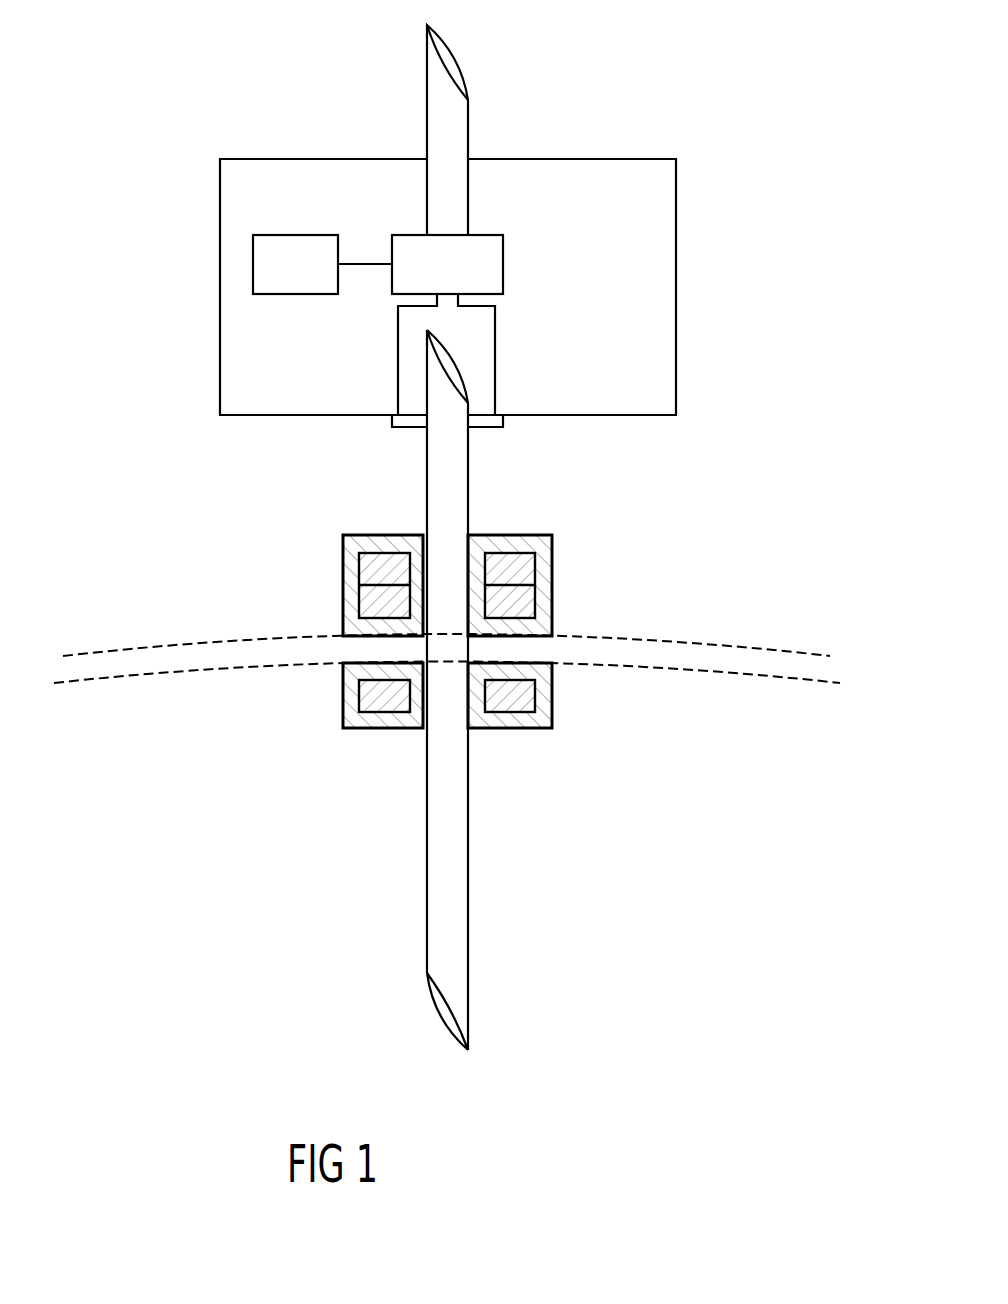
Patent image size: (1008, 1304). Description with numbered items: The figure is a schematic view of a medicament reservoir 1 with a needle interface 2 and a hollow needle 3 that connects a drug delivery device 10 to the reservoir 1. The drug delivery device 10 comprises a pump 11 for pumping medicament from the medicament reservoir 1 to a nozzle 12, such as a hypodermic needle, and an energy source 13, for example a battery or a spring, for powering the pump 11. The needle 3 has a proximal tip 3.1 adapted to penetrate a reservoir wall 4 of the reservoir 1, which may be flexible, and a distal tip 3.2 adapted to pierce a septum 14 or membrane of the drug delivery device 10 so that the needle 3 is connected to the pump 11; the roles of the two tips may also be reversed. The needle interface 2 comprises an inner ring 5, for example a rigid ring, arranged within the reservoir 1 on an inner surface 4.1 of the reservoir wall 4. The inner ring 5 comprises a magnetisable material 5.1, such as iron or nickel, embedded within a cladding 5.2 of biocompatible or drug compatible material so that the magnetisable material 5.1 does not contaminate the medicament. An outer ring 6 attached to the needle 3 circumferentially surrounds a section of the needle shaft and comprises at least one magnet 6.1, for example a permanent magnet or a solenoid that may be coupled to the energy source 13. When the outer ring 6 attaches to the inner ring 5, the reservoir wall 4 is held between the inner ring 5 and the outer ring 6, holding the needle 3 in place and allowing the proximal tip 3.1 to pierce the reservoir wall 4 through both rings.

The medicament reservoir 1 is at (766, 866).
The needle interface 2 is at (556, 634).
The hollow needle 3 is at (443, 470).
The proximal tip 3.1 is at (462, 1010).
The distal tip 3.2 is at (431, 375).
The reservoir wall 4 is at (188, 652).
The inner surface 4.1 is at (707, 668).
The inner ring 5 is at (552, 720).
The magnetisable material 5.1 is at (382, 703).
The cladding 5.2 is at (343, 695).
The outer ring 6 is at (343, 575).
The magnet 6.1 is at (530, 573).
The drug delivery device 10 is at (676, 290).
The pump 11 is at (432, 289).
The nozzle 12 is at (425, 118).
The energy source 13 is at (280, 289).
The septum 14 is at (503, 422).